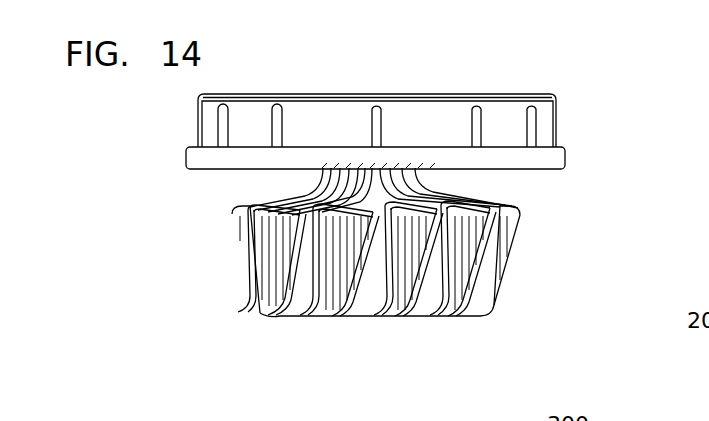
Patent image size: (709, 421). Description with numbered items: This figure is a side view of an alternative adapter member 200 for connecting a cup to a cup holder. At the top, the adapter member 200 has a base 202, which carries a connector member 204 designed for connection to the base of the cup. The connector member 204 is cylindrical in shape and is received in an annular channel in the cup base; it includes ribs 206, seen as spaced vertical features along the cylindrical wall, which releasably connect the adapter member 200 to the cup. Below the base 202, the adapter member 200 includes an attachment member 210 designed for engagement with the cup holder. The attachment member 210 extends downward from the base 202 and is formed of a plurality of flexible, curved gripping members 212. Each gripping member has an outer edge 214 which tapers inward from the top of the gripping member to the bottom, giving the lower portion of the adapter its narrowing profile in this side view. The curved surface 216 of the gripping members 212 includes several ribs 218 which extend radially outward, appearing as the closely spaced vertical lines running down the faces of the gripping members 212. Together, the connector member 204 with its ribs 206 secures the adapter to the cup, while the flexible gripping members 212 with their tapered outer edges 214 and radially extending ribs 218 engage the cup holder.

The adapter member 200 is at (395, 82).
The base 202 is at (550, 157).
The connector member 204 is at (530, 93).
The ribs 206 is at (275, 127).
The attachment member 210 is at (384, 284).
The gripping members 212 is at (502, 205).
The outer edge 214 is at (500, 275).
The curved surface 216 is at (281, 278).
The ribs 218 is at (468, 305).